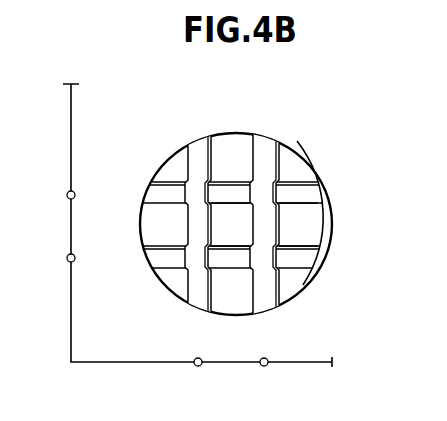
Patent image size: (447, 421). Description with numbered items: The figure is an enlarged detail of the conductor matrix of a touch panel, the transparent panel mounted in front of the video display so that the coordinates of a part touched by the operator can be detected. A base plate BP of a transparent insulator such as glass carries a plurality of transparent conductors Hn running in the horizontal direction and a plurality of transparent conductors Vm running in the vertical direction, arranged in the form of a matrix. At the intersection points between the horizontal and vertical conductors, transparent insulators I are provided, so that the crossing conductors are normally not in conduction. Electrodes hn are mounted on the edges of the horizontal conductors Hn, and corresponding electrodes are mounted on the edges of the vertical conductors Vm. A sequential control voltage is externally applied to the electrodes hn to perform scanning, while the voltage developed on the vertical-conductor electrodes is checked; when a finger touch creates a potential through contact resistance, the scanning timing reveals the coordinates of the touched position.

The transparent conductor Vm is at (187, 156).
The transparent conductor Hn is at (300, 182).
The base plate BP is at (297, 150).
The transparent insulator I is at (209, 191).
The electrode hn is at (140, 195).